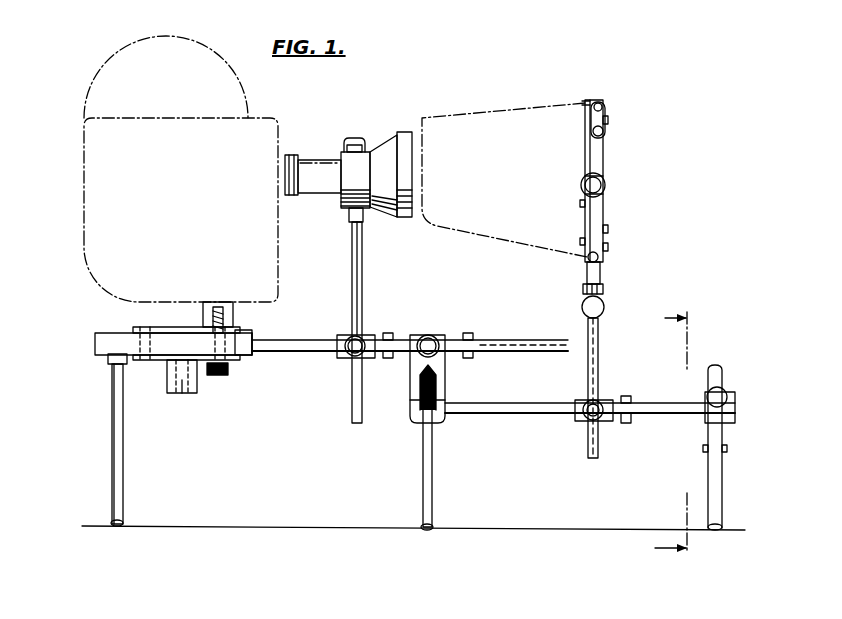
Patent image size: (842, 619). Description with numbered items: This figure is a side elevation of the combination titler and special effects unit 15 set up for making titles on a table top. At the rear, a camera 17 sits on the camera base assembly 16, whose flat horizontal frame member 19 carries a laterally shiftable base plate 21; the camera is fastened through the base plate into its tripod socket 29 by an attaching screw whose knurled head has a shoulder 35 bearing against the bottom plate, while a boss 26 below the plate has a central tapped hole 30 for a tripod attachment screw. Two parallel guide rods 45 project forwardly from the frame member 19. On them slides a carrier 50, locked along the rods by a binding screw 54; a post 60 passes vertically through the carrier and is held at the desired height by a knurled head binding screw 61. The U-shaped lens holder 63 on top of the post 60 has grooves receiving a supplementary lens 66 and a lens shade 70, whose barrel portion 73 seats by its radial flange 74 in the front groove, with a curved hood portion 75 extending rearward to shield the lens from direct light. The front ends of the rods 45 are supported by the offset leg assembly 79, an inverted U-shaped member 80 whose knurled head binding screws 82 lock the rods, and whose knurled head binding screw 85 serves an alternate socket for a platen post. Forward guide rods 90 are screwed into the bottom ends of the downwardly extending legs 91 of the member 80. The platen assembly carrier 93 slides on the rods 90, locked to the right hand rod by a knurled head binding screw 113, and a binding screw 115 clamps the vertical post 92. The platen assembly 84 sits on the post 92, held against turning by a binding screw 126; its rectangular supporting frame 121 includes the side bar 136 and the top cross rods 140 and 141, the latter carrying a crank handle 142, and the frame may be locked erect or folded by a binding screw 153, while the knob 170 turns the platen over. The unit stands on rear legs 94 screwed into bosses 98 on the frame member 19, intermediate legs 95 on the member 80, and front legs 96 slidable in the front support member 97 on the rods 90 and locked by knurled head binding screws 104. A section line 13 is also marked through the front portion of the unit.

The section line 13- 13 is at (676, 440).
The combination titler and special effects unit 15 is at (378, 288).
The camera base assembly 16 is at (241, 357).
The camera 17 is at (103, 184).
The frame member 19 is at (97, 340).
The base plate 21 is at (205, 305).
The boss 26 is at (170, 394).
The tripod socket 29 is at (222, 326).
The central tapped hole 30 is at (182, 394).
The shoulder 35 is at (222, 377).
The guide rods 45 is at (535, 322).
The carrier 50 is at (345, 353).
The binding screw 54 is at (355, 360).
The post 60 is at (352, 250).
The knurled head binding screw 61 is at (400, 316).
The U-shaped lens holder 63 is at (350, 185).
The supplementary lenses 66 is at (337, 152).
The lens shade 70 is at (408, 135).
The barrel portion 73 is at (380, 150).
The radial flange 74 is at (360, 144).
The hood portion 75 is at (352, 140).
The offset leg assembly 79 is at (410, 418).
The inverted U-shaped member 80 is at (410, 380).
The knurled head binding screws 82 is at (433, 336).
The platen assembly 84 is at (607, 182).
The knurled head binding screw 85 is at (488, 322).
The forward guide rods 90 is at (534, 395).
The legs 91 is at (440, 392).
The post 92 is at (598, 352).
The platen assembly carrier 93 is at (605, 404).
The rear legs 94 is at (112, 462).
The intermediate legs 95 is at (424, 470).
The front legs 96 is at (710, 462).
The front support member 97 is at (706, 412).
The bosses 98 is at (110, 358).
The knurled head binding screws 104 is at (722, 392).
The knurled head binding screw 113 is at (593, 420).
The binding screw 115 is at (627, 424).
The rectangular supporting frame 121 is at (608, 232).
The binding screw 126 is at (602, 306).
The side bar 136 is at (597, 218).
The cross rod 140 is at (590, 103).
The cross rod 141 is at (602, 108).
The crank handle 142 is at (592, 120).
The binding screw 153 is at (603, 278).
The knob 170 is at (581, 186).